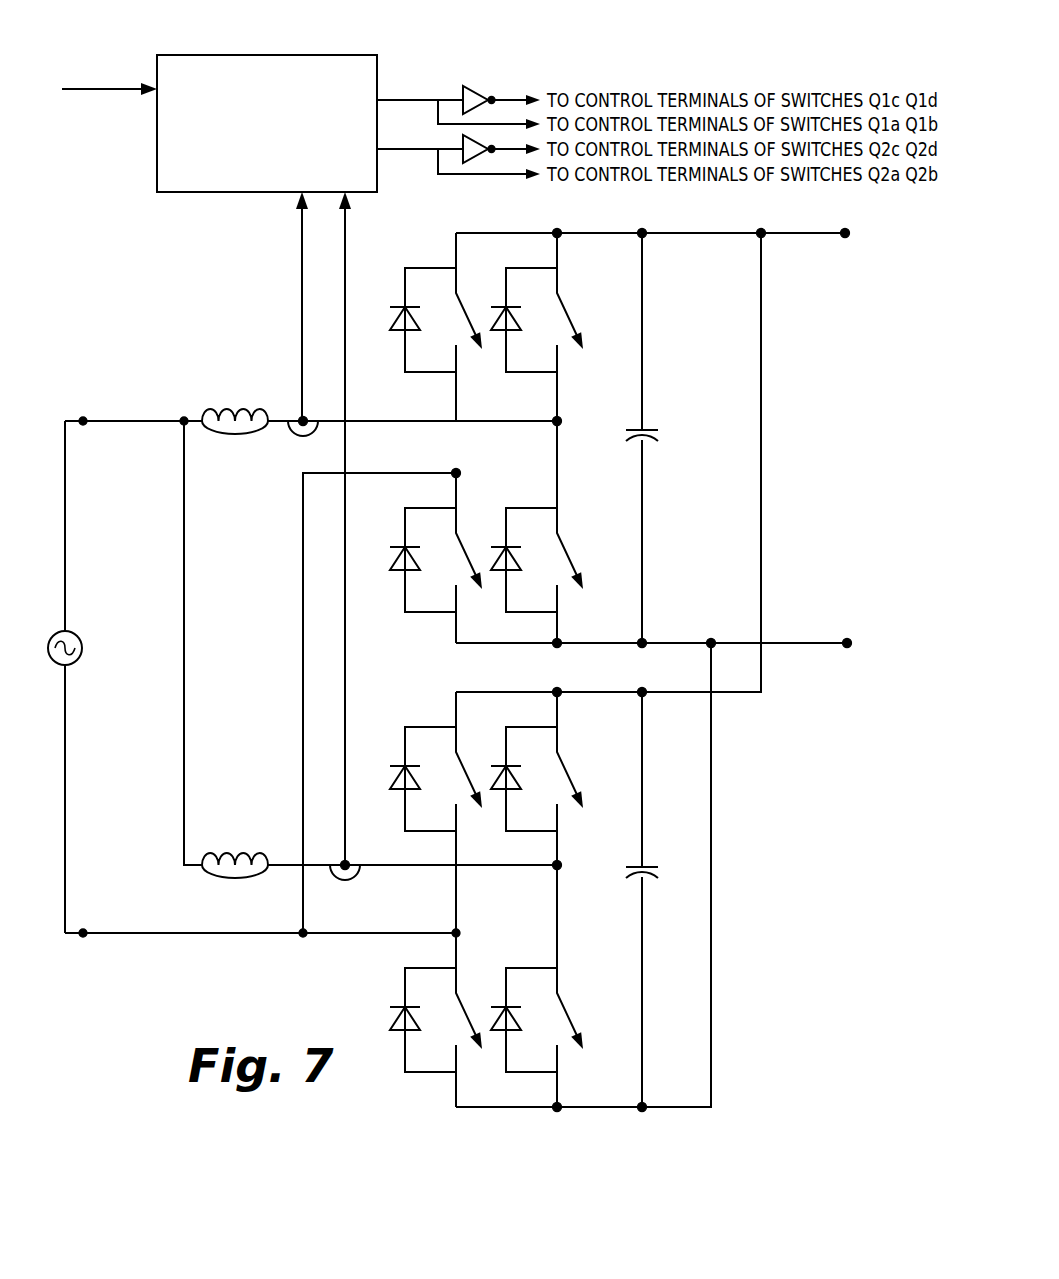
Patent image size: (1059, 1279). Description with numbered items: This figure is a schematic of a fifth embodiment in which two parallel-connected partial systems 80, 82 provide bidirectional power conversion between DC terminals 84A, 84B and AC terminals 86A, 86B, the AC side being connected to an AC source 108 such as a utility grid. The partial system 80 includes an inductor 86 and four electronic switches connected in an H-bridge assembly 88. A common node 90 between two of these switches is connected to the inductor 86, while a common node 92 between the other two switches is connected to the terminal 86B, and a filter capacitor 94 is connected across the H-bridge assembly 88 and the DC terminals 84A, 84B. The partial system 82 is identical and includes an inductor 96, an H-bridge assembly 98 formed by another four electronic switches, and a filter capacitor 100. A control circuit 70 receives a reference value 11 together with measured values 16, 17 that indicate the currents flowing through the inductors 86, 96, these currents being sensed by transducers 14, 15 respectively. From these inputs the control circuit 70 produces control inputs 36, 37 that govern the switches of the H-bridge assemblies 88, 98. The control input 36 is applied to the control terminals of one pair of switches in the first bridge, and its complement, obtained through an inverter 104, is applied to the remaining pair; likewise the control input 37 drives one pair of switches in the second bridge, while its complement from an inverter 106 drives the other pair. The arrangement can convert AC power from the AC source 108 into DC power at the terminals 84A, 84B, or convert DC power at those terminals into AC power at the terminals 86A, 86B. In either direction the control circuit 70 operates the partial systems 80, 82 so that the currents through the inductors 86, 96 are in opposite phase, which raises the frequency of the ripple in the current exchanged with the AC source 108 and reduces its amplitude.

The reference value 11 is at (104, 89).
The control circuit 70 is at (253, 55).
The control input 36 is at (421, 99).
The control input 37 is at (395, 149).
The inverter 104 is at (474, 84).
The inverter 106 is at (480, 158).
The H-bridge assembly 88 is at (517, 218).
The H-bridge assembly 98 is at (522, 686).
The partial system 80 is at (204, 338).
The partial system 82 is at (240, 968).
The measured value 16 is at (302, 290).
The measured value 17 is at (345, 337).
The AC terminal 86A is at (82, 421).
The AC terminal 86B is at (83, 933).
The inductor 86 is at (232, 434).
The inductor 96 is at (230, 858).
The transducer 14 is at (303, 437).
The transducer 15 is at (364, 877).
The common node 90 is at (557, 421).
The common node 92 is at (456, 473).
The filter capacitor 94 is at (638, 446).
The filter capacitor 100 is at (668, 866).
The DC terminal 84A is at (845, 233).
The DC terminal 84B is at (847, 643).
The AC source 108 is at (78, 634).